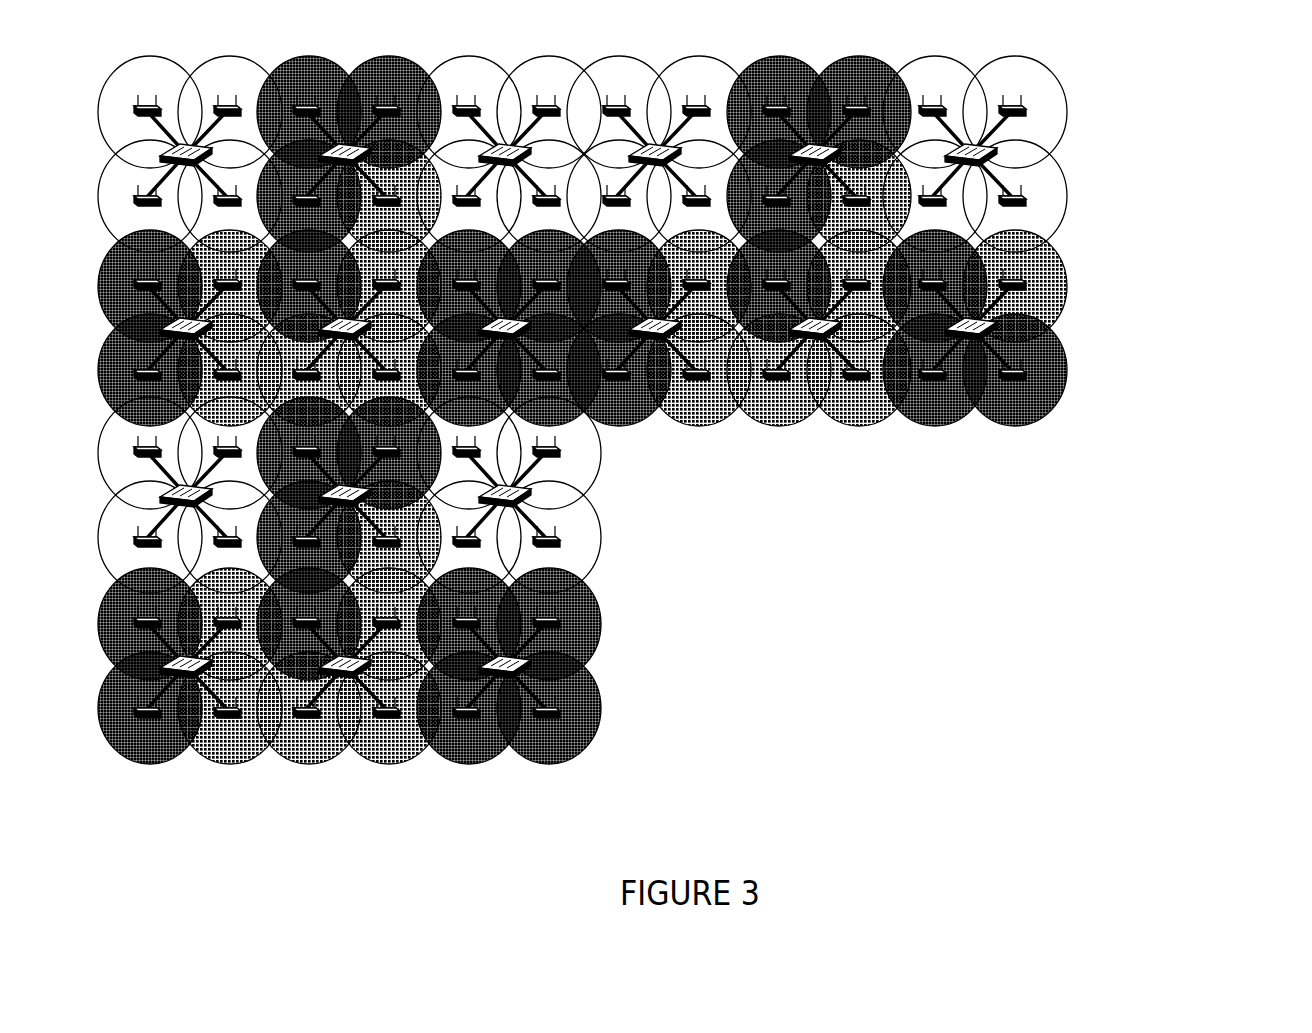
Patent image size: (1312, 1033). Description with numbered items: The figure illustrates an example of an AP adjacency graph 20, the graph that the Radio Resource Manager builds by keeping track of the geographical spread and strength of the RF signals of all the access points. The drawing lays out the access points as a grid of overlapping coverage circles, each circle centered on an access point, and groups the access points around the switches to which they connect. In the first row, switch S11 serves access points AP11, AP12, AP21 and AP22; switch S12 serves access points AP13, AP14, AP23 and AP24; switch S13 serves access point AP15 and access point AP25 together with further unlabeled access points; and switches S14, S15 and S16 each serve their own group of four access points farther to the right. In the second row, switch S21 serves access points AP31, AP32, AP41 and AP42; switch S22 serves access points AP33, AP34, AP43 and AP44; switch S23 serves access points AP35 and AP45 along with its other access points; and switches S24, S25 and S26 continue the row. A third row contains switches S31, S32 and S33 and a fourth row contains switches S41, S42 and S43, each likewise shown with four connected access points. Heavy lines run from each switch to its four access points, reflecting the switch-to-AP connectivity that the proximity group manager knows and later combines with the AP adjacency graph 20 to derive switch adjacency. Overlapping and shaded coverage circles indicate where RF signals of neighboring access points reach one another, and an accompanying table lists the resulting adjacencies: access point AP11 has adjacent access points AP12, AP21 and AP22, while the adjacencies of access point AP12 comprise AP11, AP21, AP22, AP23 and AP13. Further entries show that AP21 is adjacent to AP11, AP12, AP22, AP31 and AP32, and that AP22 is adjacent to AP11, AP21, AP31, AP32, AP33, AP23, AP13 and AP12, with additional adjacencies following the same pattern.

The AP adjacency graph 20 is at (1088, 55).
The access point AP11 is at (157, 94).
The access point AP12 is at (237, 94).
The access point AP13 is at (316, 94).
The access point AP14 is at (396, 94).
The access point AP15 is at (476, 94).
The access point AP21 is at (157, 214).
The access point AP22 is at (237, 214).
The access point AP23 is at (316, 214).
The access point AP24 is at (396, 214).
The access point AP25 is at (476, 214).
The access point AP31 is at (157, 268).
The access point AP32 is at (237, 268).
The access point AP33 is at (316, 268).
The access point AP34 is at (396, 268).
The access point AP35 is at (476, 268).
The access point AP41 is at (157, 384).
The access point AP42 is at (237, 384).
The access point AP43 is at (316, 384).
The access point AP44 is at (396, 384).
The access point AP45 is at (476, 384).
The switch S11 is at (210, 156).
The switch S12 is at (369, 156).
The switch S13 is at (529, 156).
The switch S14 is at (679, 156).
The switch S15 is at (839, 156).
The switch S16 is at (995, 156).
The switch S21 is at (210, 330).
The switch S22 is at (369, 330).
The switch S23 is at (529, 330).
The switch S24 is at (679, 330).
The switch S25 is at (839, 330).
The switch S26 is at (995, 330).
The switch S31 is at (210, 497).
The switch S32 is at (369, 497).
The switch S33 is at (529, 497).
The switch S41 is at (210, 668).
The switch S42 is at (369, 668).
The switch S43 is at (529, 668).